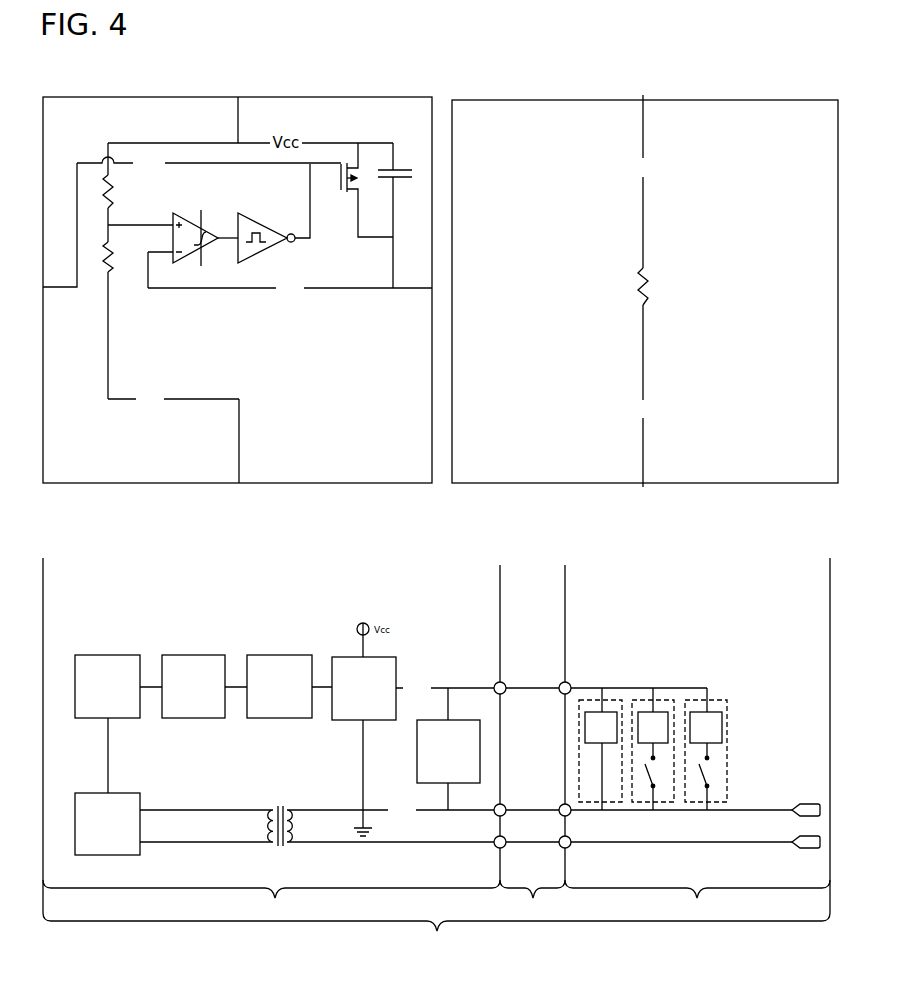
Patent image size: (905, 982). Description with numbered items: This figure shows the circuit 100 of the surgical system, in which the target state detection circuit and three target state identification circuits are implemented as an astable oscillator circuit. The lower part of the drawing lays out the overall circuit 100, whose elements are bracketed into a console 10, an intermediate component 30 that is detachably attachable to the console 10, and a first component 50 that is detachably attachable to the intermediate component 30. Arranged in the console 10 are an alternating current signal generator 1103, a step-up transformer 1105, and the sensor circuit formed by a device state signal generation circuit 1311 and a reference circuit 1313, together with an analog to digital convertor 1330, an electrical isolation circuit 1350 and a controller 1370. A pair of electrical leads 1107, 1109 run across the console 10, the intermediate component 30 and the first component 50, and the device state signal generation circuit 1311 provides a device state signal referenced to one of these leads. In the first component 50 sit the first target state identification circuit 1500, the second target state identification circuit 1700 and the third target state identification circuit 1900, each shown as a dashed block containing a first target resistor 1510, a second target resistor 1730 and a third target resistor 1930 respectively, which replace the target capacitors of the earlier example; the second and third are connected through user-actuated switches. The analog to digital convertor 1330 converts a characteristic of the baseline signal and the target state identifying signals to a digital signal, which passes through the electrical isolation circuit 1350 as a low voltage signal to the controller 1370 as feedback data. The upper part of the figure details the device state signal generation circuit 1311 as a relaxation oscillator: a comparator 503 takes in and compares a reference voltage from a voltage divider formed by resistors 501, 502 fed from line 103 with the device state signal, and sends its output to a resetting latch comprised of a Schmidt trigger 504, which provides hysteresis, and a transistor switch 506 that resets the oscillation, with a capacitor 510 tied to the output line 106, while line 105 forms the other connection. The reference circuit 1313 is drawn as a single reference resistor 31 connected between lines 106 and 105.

The device state signal generation circuit 1311 is at (237, 408).
The reference voltage line 103 is at (209, 163).
The resistor 501 is at (122, 191).
The resistor 502 is at (122, 257).
The comparator 503 is at (195, 229).
The inverter 504 is at (266, 227).
The transistor 506 is at (357, 190).
The capacitor 510 is at (399, 215).
The output line 106 is at (427, 427).
The ground line 105 is at (450, 604).
The reference circuit 1313 is at (627, 441).
The resistor 31 is at (634, 286).
The controller 1370 is at (107, 686).
The electrical isolation circuit 1350 is at (193, 686).
The analog to digital convertor 1330 is at (279, 686).
The alternating current signal generator 1103 is at (107, 824).
The step-up transformer 1105 is at (279, 837).
The first target state identification circuit 1500 is at (622, 700).
The second target state identification circuit 1700 is at (674, 700).
The third target state identification circuit 1900 is at (727, 700).
The first target resistor 1510 is at (601, 749).
The second target resistor 1730 is at (653, 749).
The third target resistor 1930 is at (706, 749).
The electrical lead 1107 is at (806, 819).
The electrical lead 1109 is at (806, 851).
The console 10 is at (271, 900).
The intermediate component 30 is at (532, 900).
The first component 50 is at (697, 900).
The circuit 100 is at (436, 937).